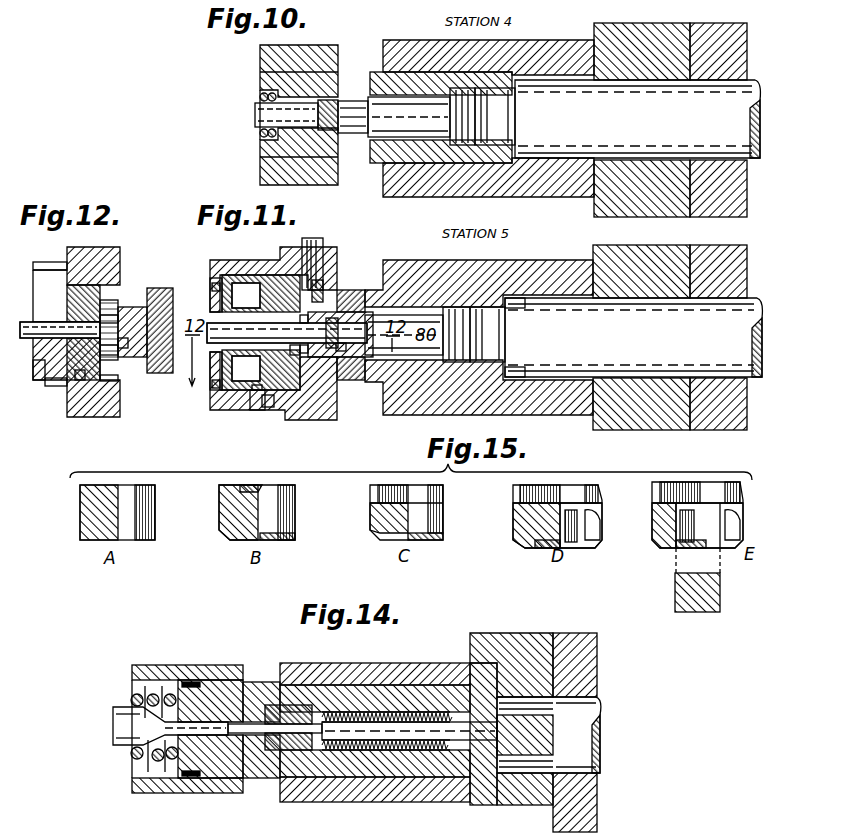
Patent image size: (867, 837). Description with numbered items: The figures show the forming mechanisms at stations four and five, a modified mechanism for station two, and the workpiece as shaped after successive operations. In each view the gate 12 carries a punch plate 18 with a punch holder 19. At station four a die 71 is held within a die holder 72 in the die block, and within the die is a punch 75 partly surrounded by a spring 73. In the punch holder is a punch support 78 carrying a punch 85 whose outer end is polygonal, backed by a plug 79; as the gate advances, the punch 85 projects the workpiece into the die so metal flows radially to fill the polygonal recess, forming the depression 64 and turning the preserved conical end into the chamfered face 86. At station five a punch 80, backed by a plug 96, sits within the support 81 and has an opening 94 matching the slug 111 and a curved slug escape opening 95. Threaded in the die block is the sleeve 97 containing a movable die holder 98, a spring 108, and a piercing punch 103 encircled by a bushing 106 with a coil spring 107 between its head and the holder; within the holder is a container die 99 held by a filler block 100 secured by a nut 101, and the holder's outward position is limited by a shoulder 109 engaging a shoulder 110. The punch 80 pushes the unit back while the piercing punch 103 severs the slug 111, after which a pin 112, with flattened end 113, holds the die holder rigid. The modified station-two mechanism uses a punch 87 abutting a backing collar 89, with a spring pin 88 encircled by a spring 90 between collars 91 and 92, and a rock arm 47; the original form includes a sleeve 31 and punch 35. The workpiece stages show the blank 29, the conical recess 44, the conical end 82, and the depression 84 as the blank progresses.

In FIG. 10, the gate 12 is at (748, 30).
In FIG. 11, the gate 12 is at (748, 263).
In FIG. 14, the gate 12 is at (590, 793).
In FIG. 10, the punch plate 18 is at (681, 3).
In FIG. 11, the punch plate 18 is at (662, 421).
In FIG. 14, the punch plate 18 is at (540, 633).
In FIG. 10, the punch holder 19 is at (432, 31).
In FIG. 11, the punch holder 19 is at (430, 260).
In FIG. 14, the punch holder 19 is at (413, 663).
In FIG. 15, the blank 29 is at (80, 532).
In FIG. 14, the sleeve 31 is at (149, 789).
In FIG. 14, the punch 35 is at (202, 737).
In FIG. 15, the conical recess 44 is at (246, 488).
In FIG. 14, the rock arm 47 is at (527, 742).
In FIG. 15, the depression 64 is at (545, 548).
In FIG. 10, the die 71 is at (344, 92).
In FIG. 10, the die holder 72 is at (260, 70).
In FIG. 10, the spring 73 is at (260, 97).
In FIG. 10, the punch 75 is at (257, 115).
In FIG. 10, the punch support 78 is at (405, 72).
In FIG. 10, the plug 79 is at (757, 82).
In FIG. 11, the punch 80 is at (356, 334).
In FIG. 12, the punch 80 is at (128, 307).
In FIG. 11, the support 81 is at (516, 306).
In FIG. 15, the conical end 82 is at (292, 542).
In FIG. 15, the depression 84 is at (385, 492).
In FIG. 10, the punch 85 is at (386, 117).
In FIG. 15, the chamfered face 86 is at (521, 546).
In FIG. 14, the punch 87 is at (270, 778).
In FIG. 14, the spring pin 88 is at (258, 723).
In FIG. 14, the backing collar 89 is at (422, 772).
In FIG. 14, the spring 90 is at (366, 751).
In FIG. 14, the collar 91 is at (314, 748).
In FIG. 14, the collar 92 is at (457, 762).
In FIG. 11, the opening 94 is at (333, 325).
In FIG. 12, the opening 94 is at (152, 362).
In FIG. 11, the slug escape opening 95 is at (338, 350).
In FIG. 12, the slug escape opening 95 is at (138, 350).
In FIG. 11, the plug 96 is at (760, 323).
In FIG. 11, the sleeve 97 is at (262, 405).
In FIG. 12, the sleeve 97 is at (50, 264).
In FIG. 11, the die holder 98 is at (255, 278).
In FIG. 12, the die holder 98 is at (100, 397).
In FIG. 11, the container die 99 is at (308, 352).
In FIG. 12, the container die 99 is at (122, 366).
In FIG. 11, the filler block 100 is at (258, 392).
In FIG. 12, the filler block 100 is at (112, 382).
In FIG. 11, the nut 101 is at (240, 372).
In FIG. 12, the nut 101 is at (83, 359).
In FIG. 11, the piercing punch 103 is at (315, 346).
In FIG. 12, the piercing punch 103 is at (100, 275).
In FIG. 12, the bushing 106 is at (40, 380).
In FIG. 11, the coil spring 107 is at (213, 300).
In FIG. 11, the spring 108 is at (250, 278).
In FIG. 12, the spring 108 is at (83, 303).
In FIG. 11, the shoulder 109 is at (270, 405).
In FIG. 12, the shoulder 109 is at (55, 387).
In FIG. 11, the shoulder 110 is at (298, 356).
In FIG. 12, the shoulder 110 is at (83, 381).
In FIG. 11, the slug 111 is at (330, 338).
In FIG. 12, the slug 111 is at (115, 300).
In FIG. 15, the slug 111 is at (722, 592).
In FIG. 11, the pin 112 is at (323, 248).
In FIG. 11, the flattened end 113 is at (323, 290).